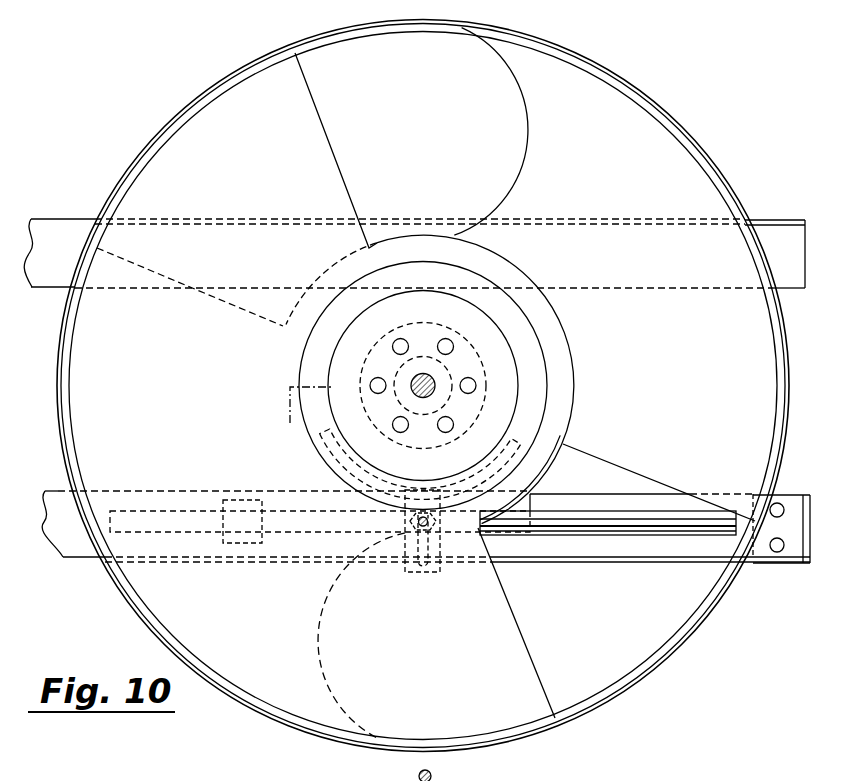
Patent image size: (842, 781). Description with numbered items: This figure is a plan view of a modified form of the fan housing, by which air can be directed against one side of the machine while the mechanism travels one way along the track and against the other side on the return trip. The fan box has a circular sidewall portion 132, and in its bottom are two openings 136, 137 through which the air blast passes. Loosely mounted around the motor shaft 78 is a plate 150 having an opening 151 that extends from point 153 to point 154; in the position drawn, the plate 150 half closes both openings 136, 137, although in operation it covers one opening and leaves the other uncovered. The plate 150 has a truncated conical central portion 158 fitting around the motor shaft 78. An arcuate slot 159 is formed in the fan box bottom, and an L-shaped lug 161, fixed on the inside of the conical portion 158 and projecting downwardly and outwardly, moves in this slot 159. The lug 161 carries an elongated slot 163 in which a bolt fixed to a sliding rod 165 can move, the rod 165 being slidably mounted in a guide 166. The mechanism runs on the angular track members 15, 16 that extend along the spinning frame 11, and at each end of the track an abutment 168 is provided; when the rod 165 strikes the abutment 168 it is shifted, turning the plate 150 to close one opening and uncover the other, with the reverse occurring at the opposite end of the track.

The circular sidewall portion 132 is at (250, 703).
The opening 137 is at (444, 146).
The point 153 is at (323, 133).
The plate 150 is at (215, 335).
The opening 151 is at (653, 363).
The truncated conical central portion 158 is at (489, 324).
The motor shaft 78 is at (431, 384).
The arcuate slot 159 is at (530, 433).
The opening 136 is at (464, 636).
The point 154 is at (543, 690).
The angular track member 16 is at (773, 200).
The angular track member 15 is at (63, 490).
The abutment 168 is at (809, 495).
The sliding rod 165 is at (636, 530).
The guide 166 is at (222, 534).
The L-shaped lug 161 is at (432, 573).
The elongated slot 163 is at (432, 552).
The spinning frame portion 11 is at (110, 600).